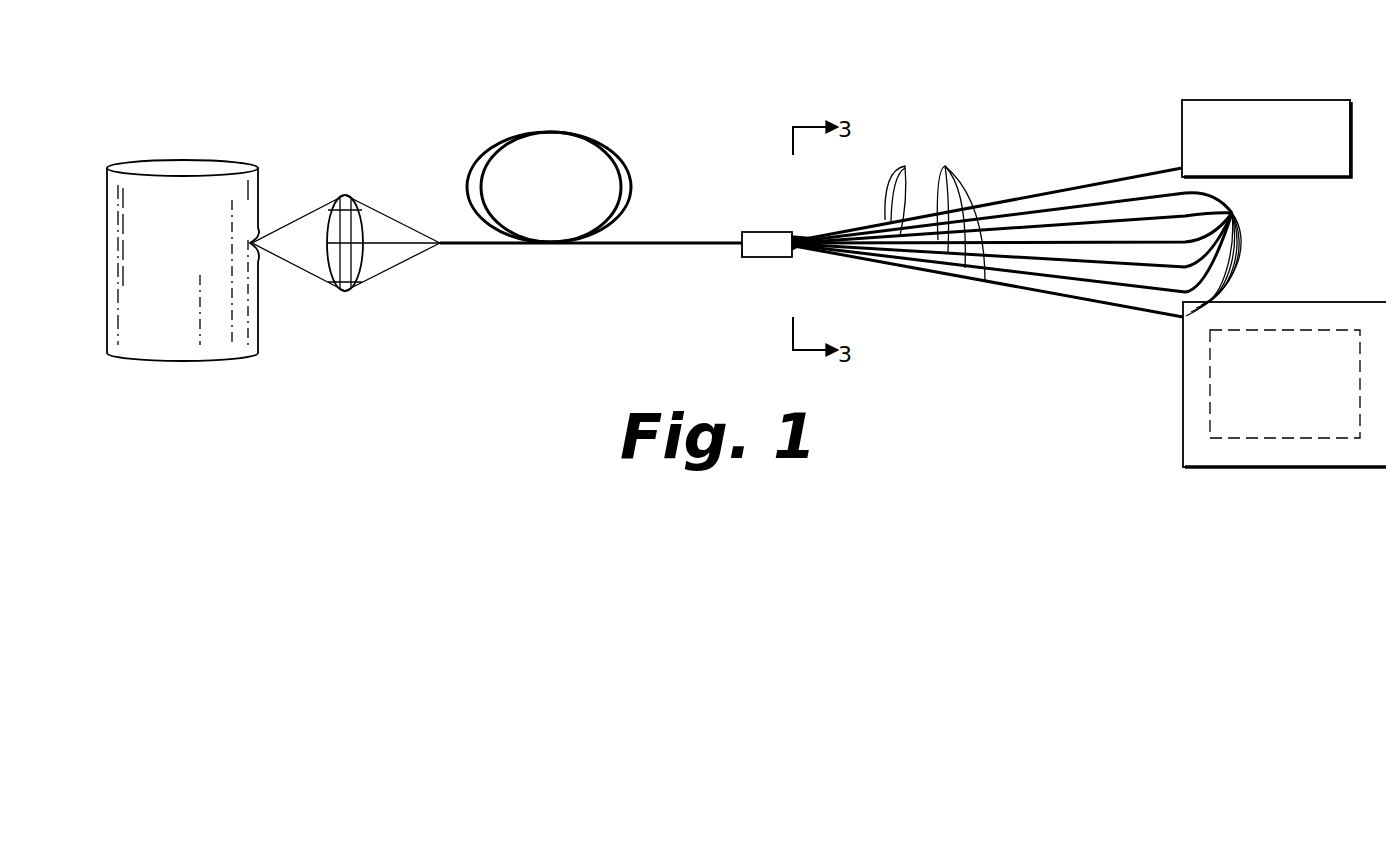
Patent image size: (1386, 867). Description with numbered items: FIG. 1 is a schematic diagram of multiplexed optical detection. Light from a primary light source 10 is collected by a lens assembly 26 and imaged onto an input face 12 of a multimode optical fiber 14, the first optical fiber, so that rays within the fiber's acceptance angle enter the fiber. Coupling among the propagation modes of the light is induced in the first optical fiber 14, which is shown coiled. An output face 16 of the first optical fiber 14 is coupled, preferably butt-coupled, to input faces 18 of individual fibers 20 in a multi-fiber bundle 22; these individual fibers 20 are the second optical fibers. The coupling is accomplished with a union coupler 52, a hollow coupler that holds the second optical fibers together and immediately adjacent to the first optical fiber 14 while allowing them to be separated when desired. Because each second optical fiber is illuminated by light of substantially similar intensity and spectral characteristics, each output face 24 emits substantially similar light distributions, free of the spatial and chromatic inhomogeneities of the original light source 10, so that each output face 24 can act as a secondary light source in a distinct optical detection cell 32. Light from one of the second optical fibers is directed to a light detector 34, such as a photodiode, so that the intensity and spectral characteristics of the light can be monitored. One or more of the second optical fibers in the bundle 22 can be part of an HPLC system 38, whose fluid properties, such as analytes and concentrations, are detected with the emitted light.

The light source 10 is at (183, 197).
The input face 12 is at (438, 248).
The multimode optical fiber 14 is at (625, 160).
The output face 16 is at (742, 250).
The input faces 18 is at (742, 238).
The individual fibers 20 is at (935, 218).
The multi-fiber bundle 22 is at (1033, 188).
The output face 24 is at (1223, 253).
The lens assembly 26 is at (355, 225).
The optical detection cell 32 is at (1208, 418).
The light detector 34 is at (1268, 100).
The HPLC system 38 is at (1262, 467).
The union coupler 52 is at (758, 232).